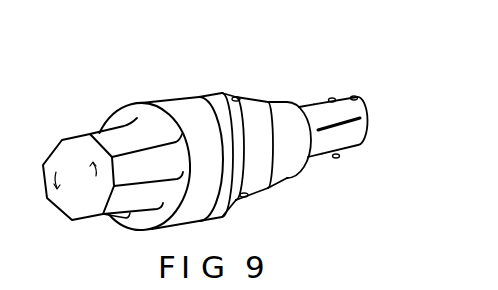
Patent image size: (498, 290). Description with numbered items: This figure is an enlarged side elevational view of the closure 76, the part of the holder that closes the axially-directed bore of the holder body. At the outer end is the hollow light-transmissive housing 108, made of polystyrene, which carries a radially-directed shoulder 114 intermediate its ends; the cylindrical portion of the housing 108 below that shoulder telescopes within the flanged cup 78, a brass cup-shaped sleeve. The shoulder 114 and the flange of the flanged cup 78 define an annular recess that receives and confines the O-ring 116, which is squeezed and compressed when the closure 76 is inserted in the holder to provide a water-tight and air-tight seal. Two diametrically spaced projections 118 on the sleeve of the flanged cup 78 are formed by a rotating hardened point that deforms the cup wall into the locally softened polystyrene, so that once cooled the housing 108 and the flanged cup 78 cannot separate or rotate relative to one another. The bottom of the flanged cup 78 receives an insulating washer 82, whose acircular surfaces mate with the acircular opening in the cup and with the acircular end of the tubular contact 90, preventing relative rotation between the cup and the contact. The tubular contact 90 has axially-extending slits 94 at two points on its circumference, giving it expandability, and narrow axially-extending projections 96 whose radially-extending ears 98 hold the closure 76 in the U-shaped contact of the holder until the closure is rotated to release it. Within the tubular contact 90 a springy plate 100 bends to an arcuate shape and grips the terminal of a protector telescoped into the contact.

The closure 76 is at (73, 121).
The flanged cup 78 is at (257, 110).
The washer 82 is at (294, 161).
The tubular contact 90 is at (350, 147).
The slits 94 is at (362, 118).
The axially-extending projections 96 is at (310, 104).
The ears 98 is at (334, 99).
The plate 100 is at (360, 99).
The housing 108 is at (107, 209).
The shoulder 114 is at (180, 100).
The O-ring 116 is at (193, 106).
The projections 118 is at (237, 97).